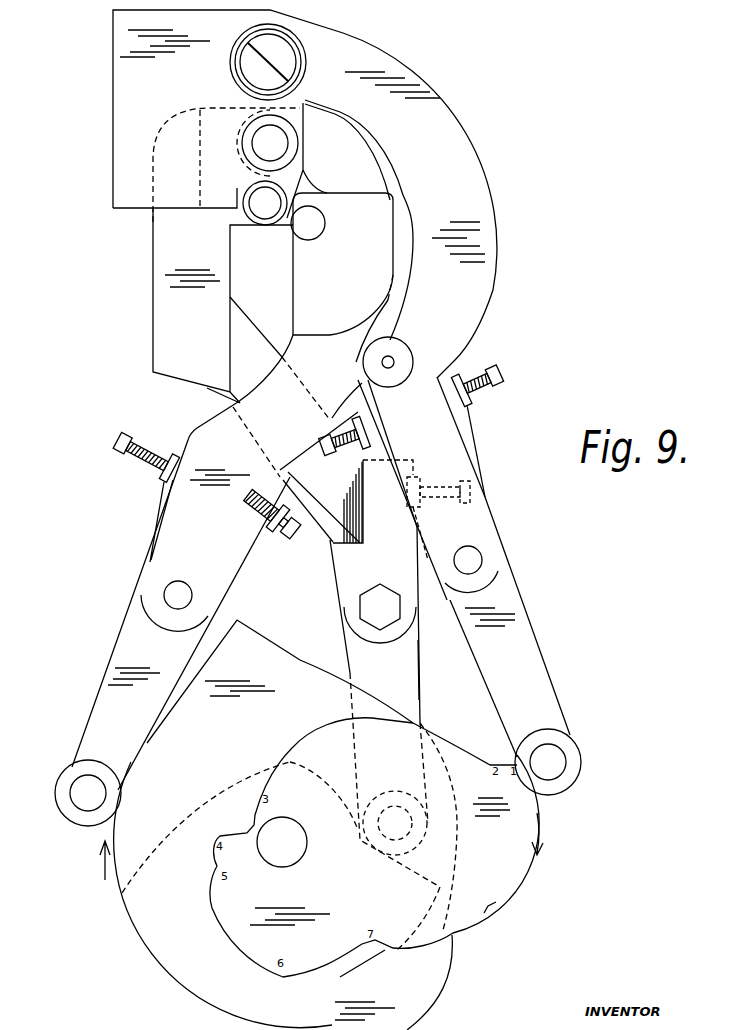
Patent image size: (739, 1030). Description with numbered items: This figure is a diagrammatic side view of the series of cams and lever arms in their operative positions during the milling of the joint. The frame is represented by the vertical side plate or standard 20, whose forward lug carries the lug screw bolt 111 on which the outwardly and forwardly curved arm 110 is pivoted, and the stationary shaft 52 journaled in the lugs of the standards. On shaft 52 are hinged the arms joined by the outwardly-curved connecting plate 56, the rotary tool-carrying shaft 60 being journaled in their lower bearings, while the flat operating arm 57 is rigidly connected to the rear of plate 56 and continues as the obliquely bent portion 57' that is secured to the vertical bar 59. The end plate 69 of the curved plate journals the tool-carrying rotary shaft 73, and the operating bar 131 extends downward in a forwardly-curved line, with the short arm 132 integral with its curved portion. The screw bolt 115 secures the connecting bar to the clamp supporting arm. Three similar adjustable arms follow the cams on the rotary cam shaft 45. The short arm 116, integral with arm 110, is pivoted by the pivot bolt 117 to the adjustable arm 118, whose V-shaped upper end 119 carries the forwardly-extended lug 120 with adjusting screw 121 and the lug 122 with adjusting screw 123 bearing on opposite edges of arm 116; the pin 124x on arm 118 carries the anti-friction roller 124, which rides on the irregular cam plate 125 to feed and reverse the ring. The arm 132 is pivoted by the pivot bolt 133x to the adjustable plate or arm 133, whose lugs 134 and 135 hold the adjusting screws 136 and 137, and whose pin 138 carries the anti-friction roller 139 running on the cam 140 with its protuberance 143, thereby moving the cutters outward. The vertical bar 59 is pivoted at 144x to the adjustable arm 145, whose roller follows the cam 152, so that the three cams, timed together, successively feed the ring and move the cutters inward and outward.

The vertical side plate or standard 20 is at (122, 123).
The outwardly and forwardly curved arm 110 is at (472, 178).
The lug screw bolt 111 is at (282, 55).
The stationary shaft 52 is at (258, 143).
The outwardly-curved connecting plate 56 is at (245, 217).
The rotary tool-carrying shaft 60 is at (262, 206).
The flat operating arm 57 is at (221, 314).
The obliquely bent portion of operating arm 57' is at (206, 405).
The tool-carrying rotary shaft 73 is at (316, 226).
The end plate 69 is at (343, 264).
The operating bar or arm 131 is at (287, 368).
The screw bolt 115 is at (394, 361).
The adjusting screw 121 is at (504, 378).
The forwardly-extended lug 120 is at (481, 389).
The V-shaped upper end of arm 119 is at (466, 436).
The short arm 116 is at (450, 467).
The pivot bolt 117 is at (483, 560).
The adjustable arm 118 is at (525, 647).
The lug 122 is at (366, 458).
The adjusting screw 123 is at (321, 484).
The vertical bar 59 is at (365, 570).
The pivotal connection 144x is at (385, 608).
The adjustable arm or plate 145 is at (412, 663).
The lug 135 is at (270, 532).
The adjusting screw 137 is at (286, 545).
The adjusting screw 136 is at (133, 456).
The lug 134 is at (164, 478).
The short arm 132 is at (178, 527).
The adjustable plate or arm 133 is at (133, 632).
The pivot bolt 133x is at (164, 595).
The pin 138 is at (70, 789).
The anti-friction roller 139 is at (70, 800).
The cam 140 is at (175, 932).
The protuberance 143 is at (325, 666).
The anti-friction roller 124 is at (572, 777).
The outwardly-extended pin 124x is at (555, 762).
The irregular cam plate 125 is at (511, 877).
The rotary cam shaft 45 is at (292, 852).
The cam 152 is at (438, 985).